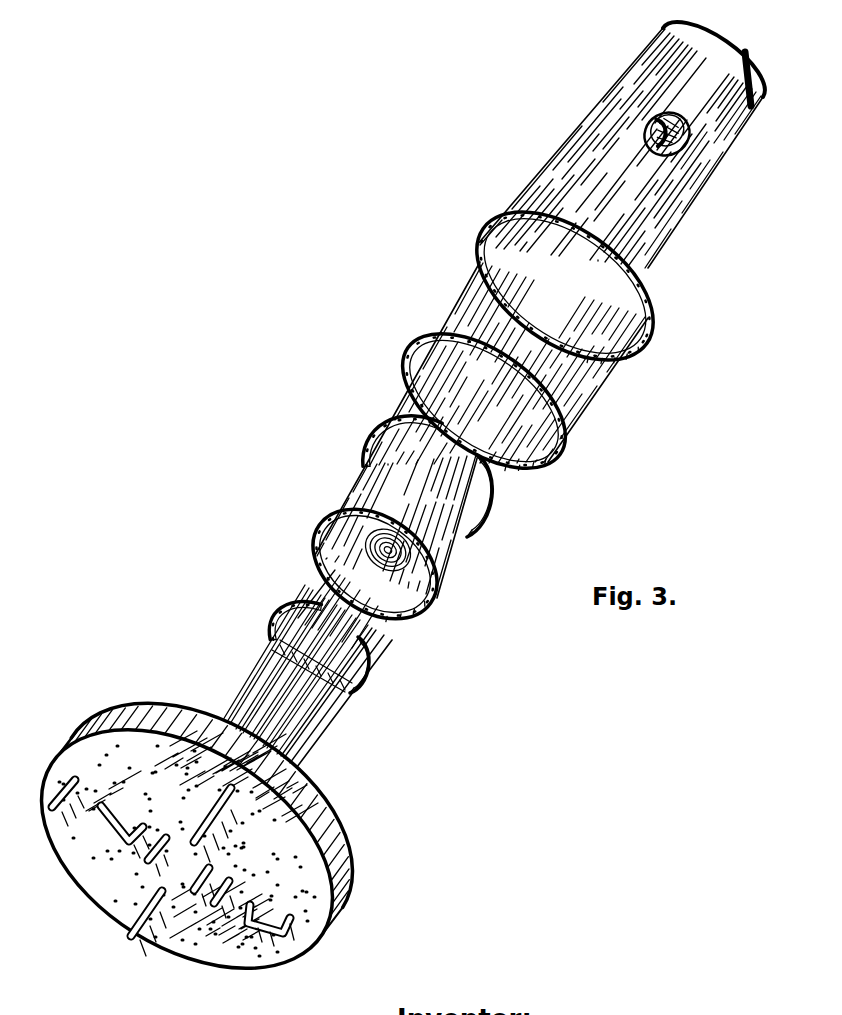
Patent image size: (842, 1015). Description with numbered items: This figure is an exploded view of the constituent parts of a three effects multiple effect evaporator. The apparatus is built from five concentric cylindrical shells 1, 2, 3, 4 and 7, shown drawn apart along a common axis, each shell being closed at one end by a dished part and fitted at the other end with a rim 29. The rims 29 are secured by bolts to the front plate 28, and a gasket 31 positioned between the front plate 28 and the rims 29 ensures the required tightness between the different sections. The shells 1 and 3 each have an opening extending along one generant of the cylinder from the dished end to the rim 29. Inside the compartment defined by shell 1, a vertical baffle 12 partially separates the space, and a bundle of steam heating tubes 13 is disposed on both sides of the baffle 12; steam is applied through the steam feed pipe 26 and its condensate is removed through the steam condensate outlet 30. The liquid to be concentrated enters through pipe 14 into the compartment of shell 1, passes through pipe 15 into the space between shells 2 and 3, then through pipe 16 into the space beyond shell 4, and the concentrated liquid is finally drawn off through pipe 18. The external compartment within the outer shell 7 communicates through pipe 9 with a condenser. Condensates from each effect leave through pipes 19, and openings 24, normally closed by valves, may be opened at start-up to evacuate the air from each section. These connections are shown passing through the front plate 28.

The cylindrical shell 1 is at (378, 655).
The cylindrical shell 2 is at (441, 565).
The cylindrical shell 3 is at (505, 486).
The cylindrical shell 4 is at (570, 396).
The cylindrical shell 7 is at (683, 244).
The pipe 9 is at (645, 136).
The vertical baffle 12 is at (292, 700).
The bundle of steam heating tubes 13 is at (313, 741).
The pipe 14 is at (222, 900).
The pipe 15 is at (124, 832).
The pipe 16 is at (262, 932).
The pipe 18 is at (50, 808).
The pipes 19 is at (128, 931).
The openings 24 is at (205, 818).
The steam feed pipe 26 is at (194, 880).
The front plate 28 is at (263, 968).
The rims 29 is at (427, 335).
The steam condensate outlet 30 is at (146, 860).
The gasket 31 is at (333, 826).